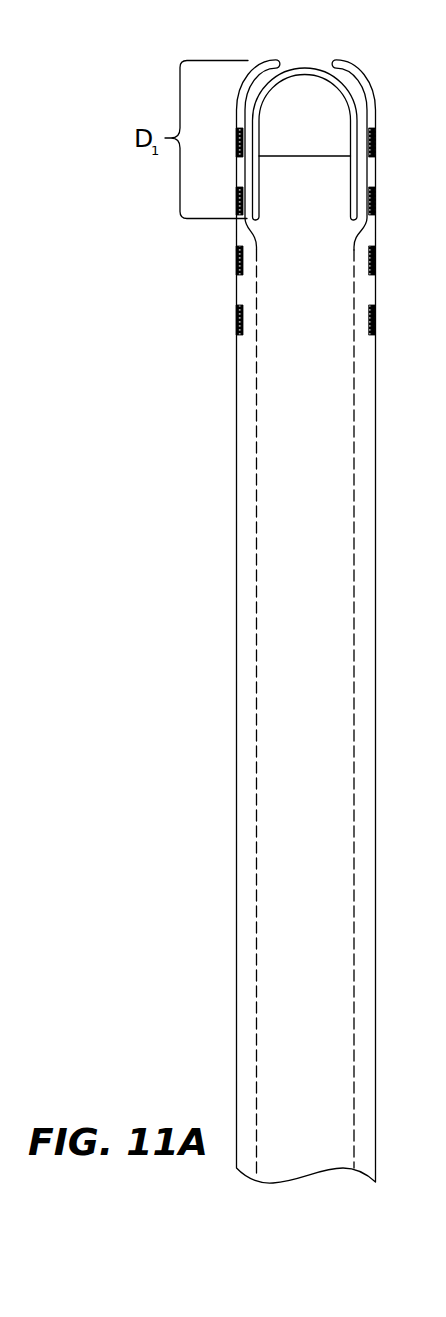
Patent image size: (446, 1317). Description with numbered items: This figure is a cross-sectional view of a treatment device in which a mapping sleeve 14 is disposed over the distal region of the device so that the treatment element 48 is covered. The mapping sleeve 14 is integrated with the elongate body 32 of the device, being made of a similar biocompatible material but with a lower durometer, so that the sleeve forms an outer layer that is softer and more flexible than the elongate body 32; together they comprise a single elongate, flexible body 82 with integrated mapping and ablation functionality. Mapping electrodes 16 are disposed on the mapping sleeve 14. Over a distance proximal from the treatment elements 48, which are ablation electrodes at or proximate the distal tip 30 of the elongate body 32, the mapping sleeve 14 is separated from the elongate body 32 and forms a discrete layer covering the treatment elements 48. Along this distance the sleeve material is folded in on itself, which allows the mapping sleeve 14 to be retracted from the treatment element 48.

The distal tip 30 is at (315, 68).
The treatment element 48 is at (290, 98).
The elongate body 32 is at (352, 180).
The mapping electrodes 16 is at (237, 138).
The mapping sleeve 14 is at (236, 370).
The elongate flexible body 82 is at (236, 458).